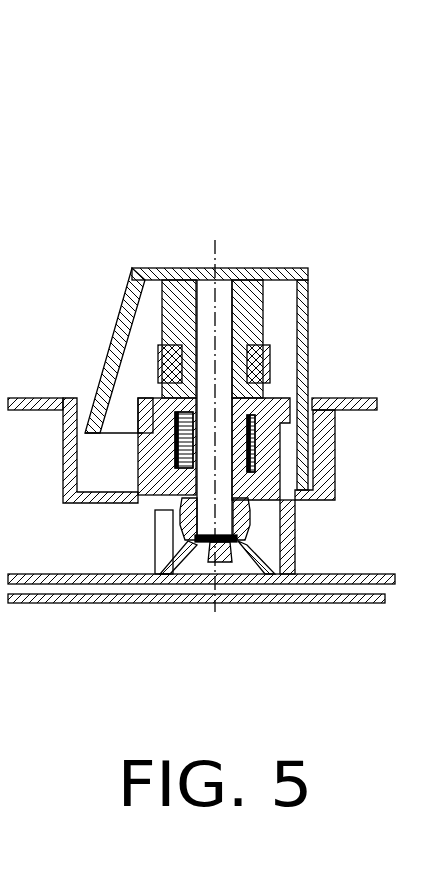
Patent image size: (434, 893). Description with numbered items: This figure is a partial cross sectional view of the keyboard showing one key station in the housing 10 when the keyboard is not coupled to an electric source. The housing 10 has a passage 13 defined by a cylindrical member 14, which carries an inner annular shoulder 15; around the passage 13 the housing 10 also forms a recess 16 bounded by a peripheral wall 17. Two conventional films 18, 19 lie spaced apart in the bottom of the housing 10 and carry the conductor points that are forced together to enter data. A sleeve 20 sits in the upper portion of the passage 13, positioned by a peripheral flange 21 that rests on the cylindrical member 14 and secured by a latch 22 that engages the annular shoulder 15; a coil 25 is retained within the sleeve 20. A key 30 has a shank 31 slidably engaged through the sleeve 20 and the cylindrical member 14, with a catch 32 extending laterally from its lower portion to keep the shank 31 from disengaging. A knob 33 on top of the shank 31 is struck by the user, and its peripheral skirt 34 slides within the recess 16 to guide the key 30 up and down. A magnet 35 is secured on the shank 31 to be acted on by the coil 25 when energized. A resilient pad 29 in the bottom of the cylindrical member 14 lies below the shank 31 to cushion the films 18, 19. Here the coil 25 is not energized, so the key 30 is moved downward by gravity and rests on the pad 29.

The housing 10 is at (352, 398).
The passage 13 is at (178, 470).
The cylindrical member 14 is at (288, 542).
The annular shoulder 15 is at (155, 460).
The recess 16 is at (88, 452).
The peripheral wall 17 is at (68, 468).
The film 18 is at (367, 577).
The film 19 is at (375, 602).
The sleeve 20 is at (266, 447).
The peripheral flange 21 is at (280, 403).
The latch 22 is at (152, 507).
The coil 25 is at (177, 417).
The resilient pad 29 is at (243, 540).
The key 30 is at (252, 212).
The shank 31 is at (240, 495).
The catch 32 is at (178, 570).
The knob 33 is at (199, 268).
The peripheral skirt 34 is at (303, 373).
The magnet 35 is at (268, 345).